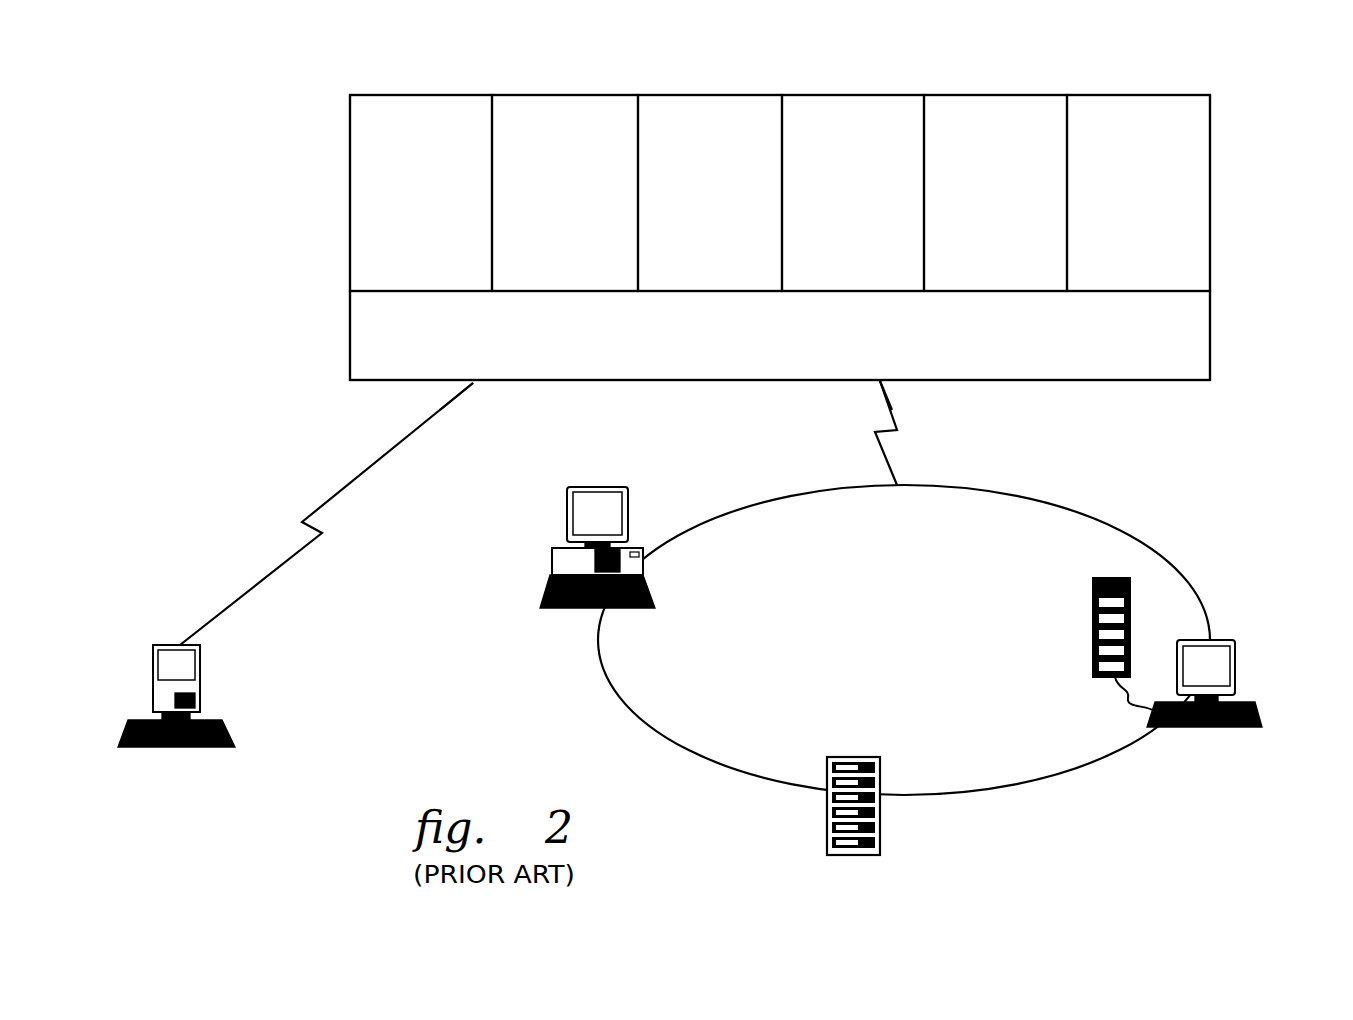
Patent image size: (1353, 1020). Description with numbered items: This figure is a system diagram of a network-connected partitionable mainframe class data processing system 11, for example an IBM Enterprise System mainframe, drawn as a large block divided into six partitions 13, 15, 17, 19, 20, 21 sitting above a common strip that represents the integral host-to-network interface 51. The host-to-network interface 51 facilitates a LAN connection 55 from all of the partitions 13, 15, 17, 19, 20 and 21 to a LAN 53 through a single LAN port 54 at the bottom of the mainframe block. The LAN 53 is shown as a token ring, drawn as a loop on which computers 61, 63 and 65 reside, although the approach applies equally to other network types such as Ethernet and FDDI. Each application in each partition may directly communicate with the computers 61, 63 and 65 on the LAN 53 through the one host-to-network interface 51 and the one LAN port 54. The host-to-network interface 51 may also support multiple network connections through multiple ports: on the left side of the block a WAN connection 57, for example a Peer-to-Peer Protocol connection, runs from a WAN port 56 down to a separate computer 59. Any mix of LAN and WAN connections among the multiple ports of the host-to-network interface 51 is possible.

The partitionable mainframe class data processing system 11 is at (1210, 180).
The partition 13 is at (438, 204).
The partition 15 is at (575, 203).
The partition 17 is at (712, 203).
The partition 19 is at (872, 200).
The partition 20 is at (976, 199).
The partition 21 is at (1114, 199).
The host-to-network interface 51 is at (1057, 351).
The LAN 53 is at (985, 788).
The LAN port 54 is at (884, 383).
The LAN connection 55 is at (882, 452).
The WAN port 56 is at (474, 385).
The WAN connection 57 is at (388, 450).
The computer 59 is at (200, 668).
The computer 61 is at (643, 562).
The computer 63 is at (862, 757).
The computer 65 is at (1235, 668).